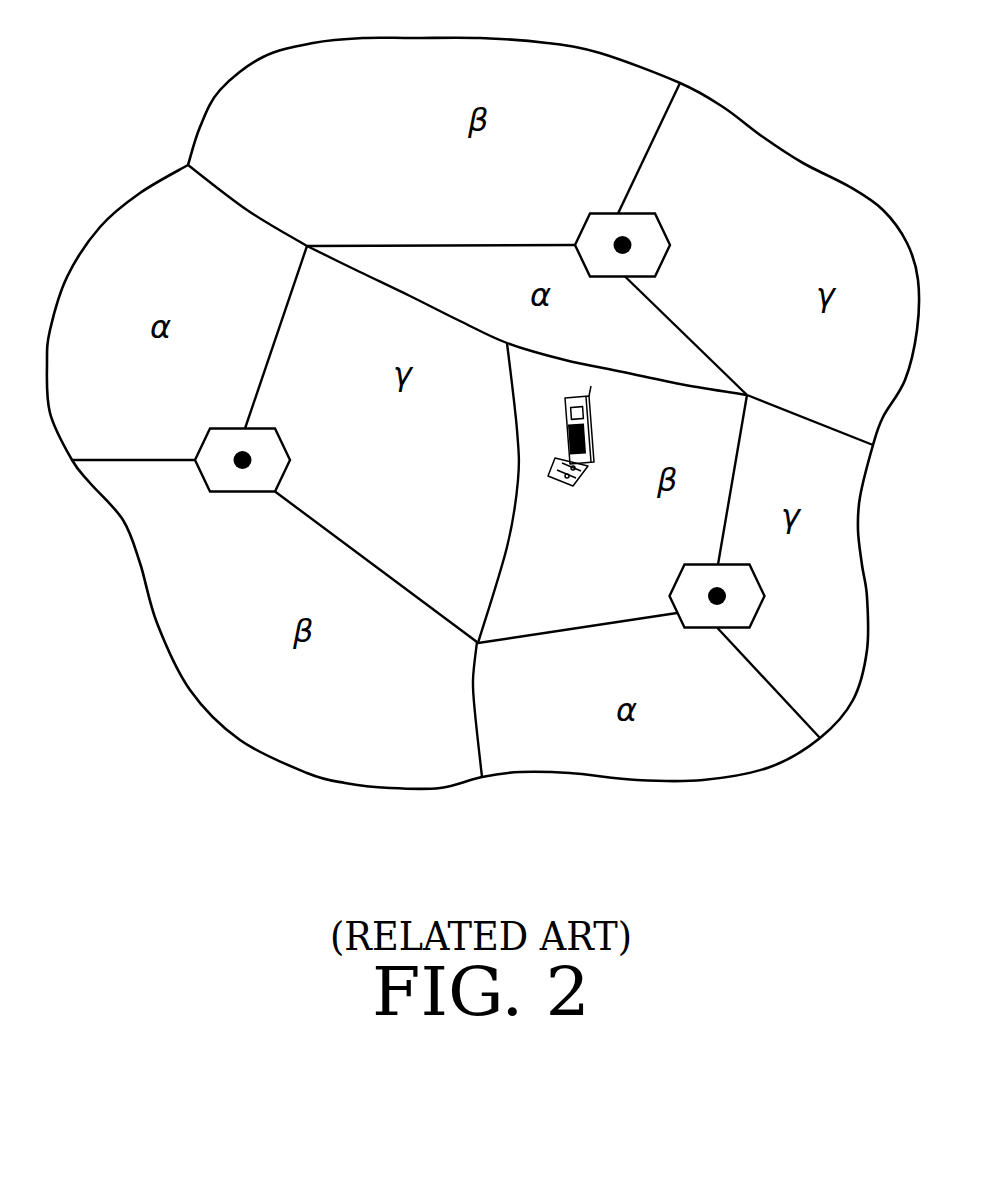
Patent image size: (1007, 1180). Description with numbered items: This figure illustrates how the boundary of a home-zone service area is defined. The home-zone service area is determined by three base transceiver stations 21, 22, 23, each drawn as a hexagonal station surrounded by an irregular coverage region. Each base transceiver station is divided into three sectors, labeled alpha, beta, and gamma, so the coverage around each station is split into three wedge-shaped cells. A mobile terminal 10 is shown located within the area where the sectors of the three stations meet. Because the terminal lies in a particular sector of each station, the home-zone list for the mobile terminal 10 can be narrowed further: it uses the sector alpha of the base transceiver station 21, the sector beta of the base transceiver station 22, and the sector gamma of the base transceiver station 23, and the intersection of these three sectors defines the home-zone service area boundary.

The mobile terminal 10 is at (593, 463).
The base transceiver station 21 is at (670, 245).
The base transceiver station 22 is at (764, 596).
The base transceiver station 23 is at (290, 460).